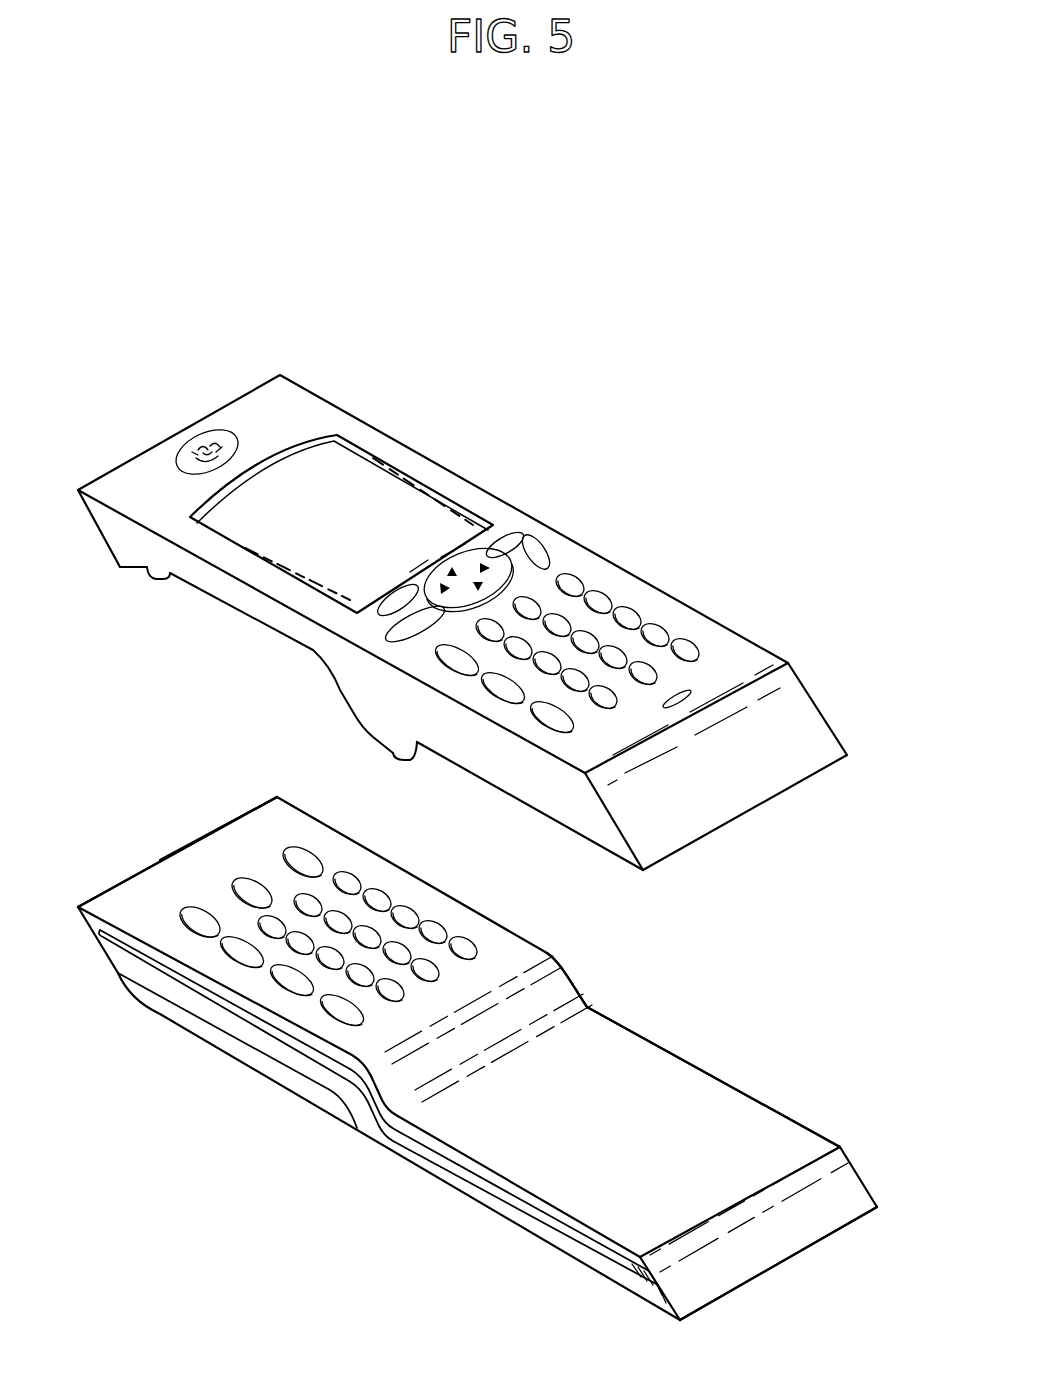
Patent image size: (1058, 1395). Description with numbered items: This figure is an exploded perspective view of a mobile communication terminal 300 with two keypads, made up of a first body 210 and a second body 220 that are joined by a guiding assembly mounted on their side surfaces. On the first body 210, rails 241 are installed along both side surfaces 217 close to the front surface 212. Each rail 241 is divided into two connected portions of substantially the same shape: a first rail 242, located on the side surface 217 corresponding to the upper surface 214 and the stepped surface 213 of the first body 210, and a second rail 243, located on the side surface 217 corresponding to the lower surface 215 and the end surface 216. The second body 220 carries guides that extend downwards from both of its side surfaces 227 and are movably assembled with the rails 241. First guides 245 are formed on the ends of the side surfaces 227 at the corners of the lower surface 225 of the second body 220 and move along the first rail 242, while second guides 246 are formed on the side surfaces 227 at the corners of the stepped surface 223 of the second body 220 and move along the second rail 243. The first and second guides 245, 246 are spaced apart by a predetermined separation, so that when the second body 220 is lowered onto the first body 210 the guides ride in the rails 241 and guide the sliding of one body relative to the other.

The mobile communication terminal 300 is at (710, 402).
The second body 220 is at (697, 600).
The first body 210 is at (722, 1064).
The front surface 212 is at (138, 887).
The stepped surface 213 is at (543, 990).
The upper surface 214 is at (203, 858).
The lower surface 215 is at (593, 1047).
The end surface 216 is at (798, 1233).
The side surface 217 is at (157, 982).
The stepped surface 223 is at (347, 713).
The lower surface 225 is at (245, 614).
The side surface 227 is at (585, 810).
The rail 241 is at (265, 1188).
The first rail 242 is at (303, 1052).
The second rail 243 is at (422, 1147).
The first guide 245 is at (147, 580).
The second guide 246 is at (393, 740).